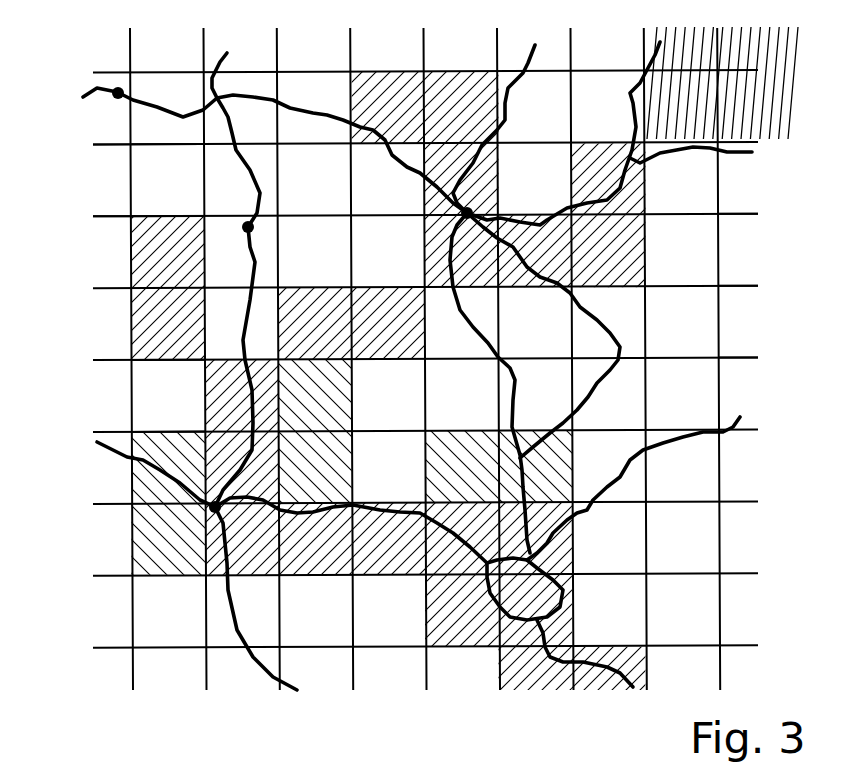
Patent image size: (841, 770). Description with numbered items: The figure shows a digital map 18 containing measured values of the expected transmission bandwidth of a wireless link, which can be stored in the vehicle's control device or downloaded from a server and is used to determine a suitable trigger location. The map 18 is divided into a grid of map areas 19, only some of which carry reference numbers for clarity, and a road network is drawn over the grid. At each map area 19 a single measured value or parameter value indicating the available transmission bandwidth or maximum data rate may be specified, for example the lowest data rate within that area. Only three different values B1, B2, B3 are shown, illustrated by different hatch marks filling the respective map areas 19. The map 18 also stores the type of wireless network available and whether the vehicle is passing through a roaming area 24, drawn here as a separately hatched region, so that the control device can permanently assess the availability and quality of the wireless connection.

The digital map 18 is at (90, 540).
The map area 19 is at (110, 160).
The roaming area 24 is at (725, 91).
The first data rate value B1 is at (162, 318).
The second data rate value B2 is at (162, 478).
The third data rate value B3 is at (165, 402).